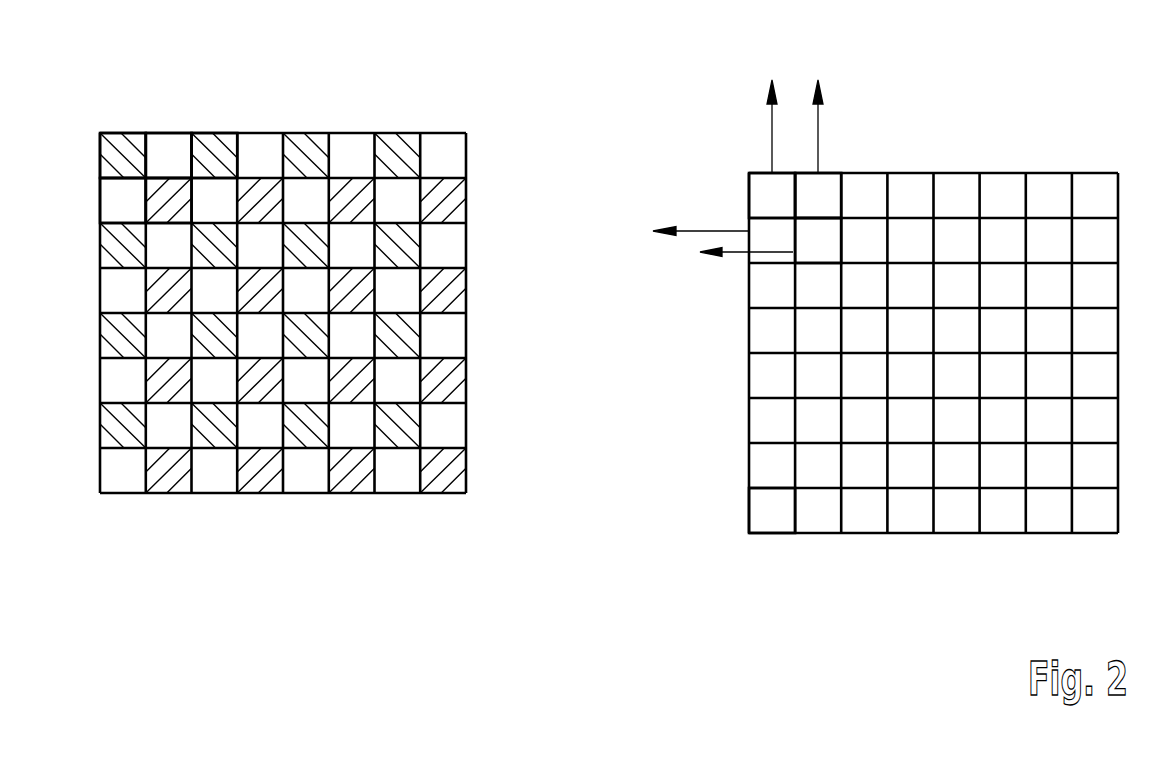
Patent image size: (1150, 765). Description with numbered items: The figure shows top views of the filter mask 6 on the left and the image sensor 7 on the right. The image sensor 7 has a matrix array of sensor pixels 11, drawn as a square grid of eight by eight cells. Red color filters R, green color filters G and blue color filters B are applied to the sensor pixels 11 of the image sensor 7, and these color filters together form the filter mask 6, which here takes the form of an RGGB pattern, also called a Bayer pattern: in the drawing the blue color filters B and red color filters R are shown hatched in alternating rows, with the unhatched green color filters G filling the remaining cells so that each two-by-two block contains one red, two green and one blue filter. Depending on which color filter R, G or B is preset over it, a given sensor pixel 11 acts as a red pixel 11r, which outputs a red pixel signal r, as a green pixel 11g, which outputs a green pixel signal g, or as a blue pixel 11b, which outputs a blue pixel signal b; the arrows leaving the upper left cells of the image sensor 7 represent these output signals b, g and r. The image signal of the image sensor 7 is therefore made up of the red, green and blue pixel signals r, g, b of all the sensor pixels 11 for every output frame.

The filter mask 6 is at (100, 494).
The blue color filter B is at (121, 142).
The green color filter G is at (167, 142).
The red color filter R is at (169, 221).
The image sensor 7 is at (1117, 537).
The sensor pixel 11 is at (757, 511).
The blue pixel 11b is at (762, 191).
The green pixel 11g is at (830, 182).
The red pixel 11r is at (818, 258).
The blue pixel signal b is at (770, 127).
The green pixel signal g is at (817, 125).
The red pixel signal r is at (733, 255).